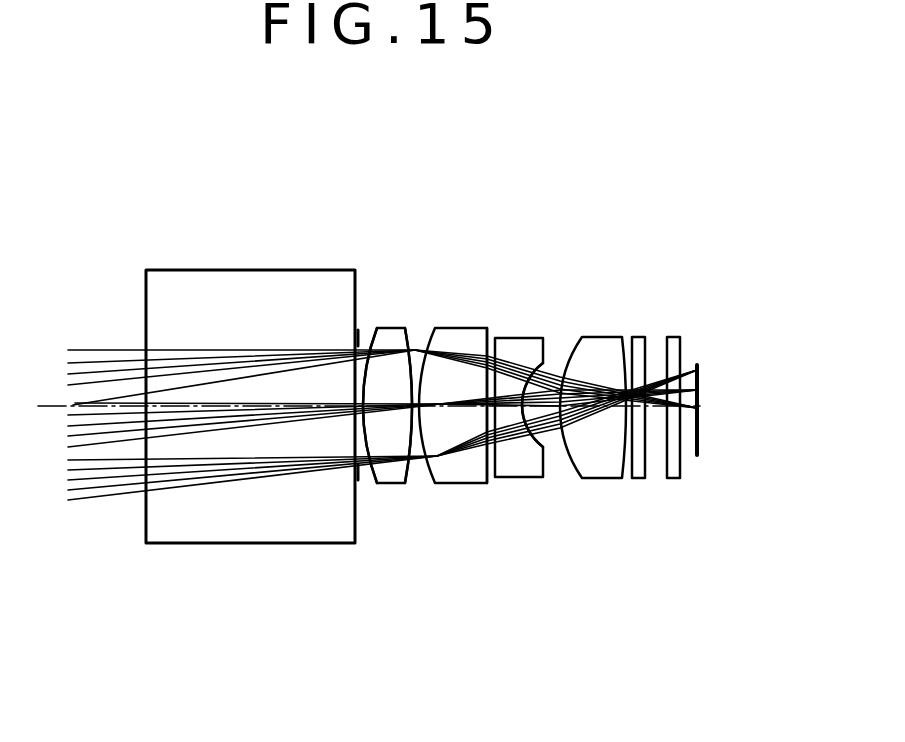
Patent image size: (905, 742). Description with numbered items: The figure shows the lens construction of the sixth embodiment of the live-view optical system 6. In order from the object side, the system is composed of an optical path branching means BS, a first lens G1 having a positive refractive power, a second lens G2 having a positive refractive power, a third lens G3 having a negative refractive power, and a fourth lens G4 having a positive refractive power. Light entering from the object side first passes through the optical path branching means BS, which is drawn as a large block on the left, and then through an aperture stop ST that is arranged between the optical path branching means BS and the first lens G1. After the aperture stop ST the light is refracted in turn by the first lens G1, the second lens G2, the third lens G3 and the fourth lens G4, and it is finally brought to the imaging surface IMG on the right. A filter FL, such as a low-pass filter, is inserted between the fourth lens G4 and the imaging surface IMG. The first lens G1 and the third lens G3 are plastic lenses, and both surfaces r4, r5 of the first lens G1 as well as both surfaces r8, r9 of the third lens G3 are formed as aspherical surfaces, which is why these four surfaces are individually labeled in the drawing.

The live-view optical system 6 is at (592, 228).
The optical path branching means BS is at (213, 293).
The aperture stop ST is at (358, 337).
The first lens G1 is at (393, 335).
The second lens G2 is at (465, 335).
The third lens G3 is at (522, 336).
The fourth lens G4 is at (594, 343).
The filter FL is at (672, 343).
The imaging surface IMG is at (697, 452).
The object-side surface of the first lens r4 is at (364, 473).
The image-side surface of the first lens r5 is at (410, 483).
The object-side surface of the third lens r8 is at (477, 486).
The image-side surface of the third lens r9 is at (548, 447).